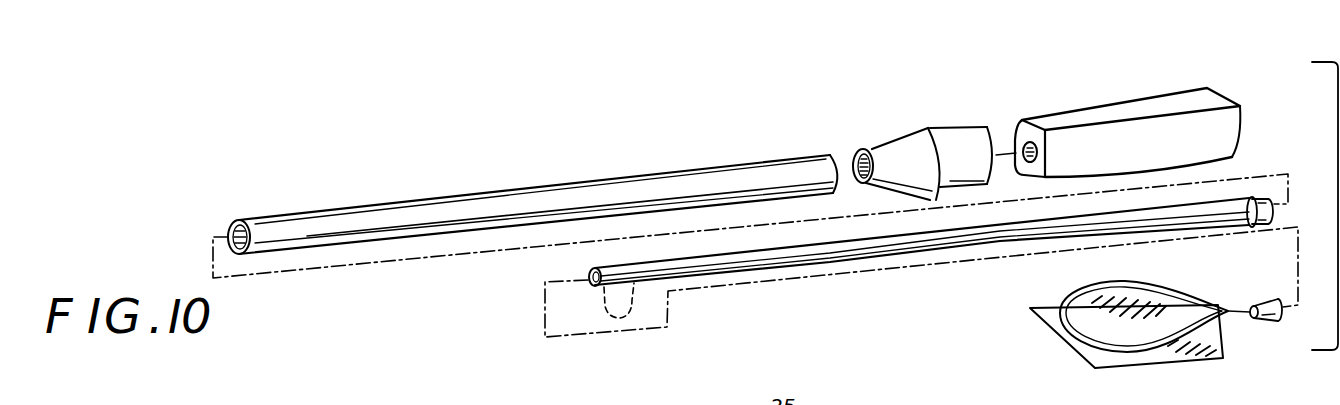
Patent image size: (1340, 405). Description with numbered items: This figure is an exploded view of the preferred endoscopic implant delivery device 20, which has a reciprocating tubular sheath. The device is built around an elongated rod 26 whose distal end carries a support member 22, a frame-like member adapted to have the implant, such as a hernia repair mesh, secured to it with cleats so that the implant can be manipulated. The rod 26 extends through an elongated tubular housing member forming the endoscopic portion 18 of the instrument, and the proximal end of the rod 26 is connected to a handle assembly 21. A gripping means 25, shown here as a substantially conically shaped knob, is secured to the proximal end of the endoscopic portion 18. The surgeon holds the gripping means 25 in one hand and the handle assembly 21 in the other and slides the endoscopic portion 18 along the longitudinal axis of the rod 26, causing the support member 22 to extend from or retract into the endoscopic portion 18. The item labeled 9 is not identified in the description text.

The delivery device 20 is at (720, 113).
The endoscopic portion 18 is at (568, 185).
The gripping means 25 is at (902, 145).
The handle assembly 21 is at (1130, 103).
The elongated rod 26 is at (778, 253).
The support member 22 is at (1185, 293).
The sheet / pad 9 is at (1100, 360).